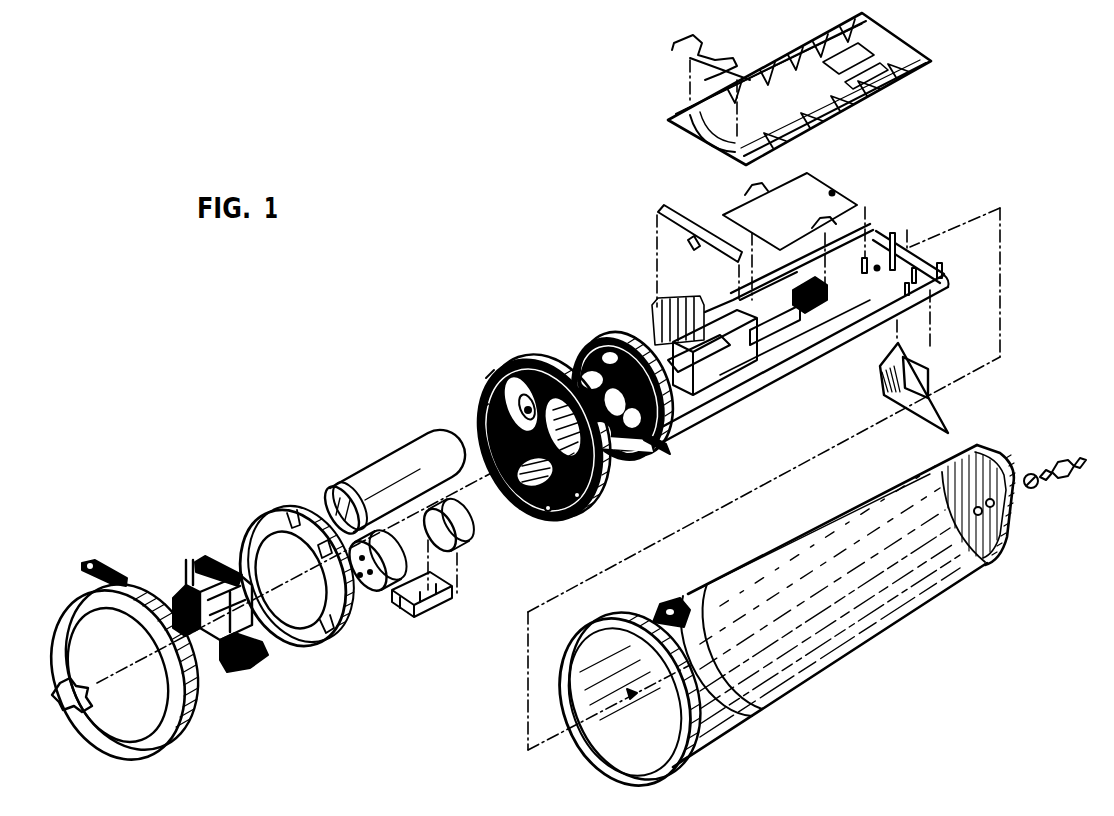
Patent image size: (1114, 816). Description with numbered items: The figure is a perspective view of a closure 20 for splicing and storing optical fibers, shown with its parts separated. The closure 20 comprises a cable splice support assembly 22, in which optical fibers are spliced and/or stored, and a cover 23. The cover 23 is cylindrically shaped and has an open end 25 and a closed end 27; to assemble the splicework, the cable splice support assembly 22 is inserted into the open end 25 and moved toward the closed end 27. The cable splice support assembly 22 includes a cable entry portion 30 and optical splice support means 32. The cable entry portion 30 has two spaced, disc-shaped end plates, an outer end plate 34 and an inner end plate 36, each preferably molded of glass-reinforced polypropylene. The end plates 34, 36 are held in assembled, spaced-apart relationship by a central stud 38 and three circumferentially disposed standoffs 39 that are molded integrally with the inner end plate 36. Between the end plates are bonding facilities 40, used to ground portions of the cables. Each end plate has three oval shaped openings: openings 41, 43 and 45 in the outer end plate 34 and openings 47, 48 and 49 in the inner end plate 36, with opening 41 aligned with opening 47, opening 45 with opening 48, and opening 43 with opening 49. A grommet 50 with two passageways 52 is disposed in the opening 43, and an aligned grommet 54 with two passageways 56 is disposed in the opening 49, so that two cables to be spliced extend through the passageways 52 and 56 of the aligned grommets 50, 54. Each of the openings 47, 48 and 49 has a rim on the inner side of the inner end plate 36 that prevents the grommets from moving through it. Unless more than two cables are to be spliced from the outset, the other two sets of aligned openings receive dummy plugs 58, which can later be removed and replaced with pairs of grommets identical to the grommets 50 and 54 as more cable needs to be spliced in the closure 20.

The closure 20 is at (529, 177).
The cable splice support assembly 22 is at (624, 225).
The cover 23 is at (862, 647).
The open end 25 is at (620, 730).
The closed end 27 is at (1010, 467).
The cable entry portion 30 is at (510, 337).
The optical splice support means 32 is at (780, 434).
The outer end plate 34 is at (490, 373).
The inner end plate 36 is at (600, 338).
The central stud 38 is at (563, 380).
The standoffs 39 is at (610, 457).
The bonding facilities 40 is at (663, 447).
The opening 41 is at (482, 407).
The opening 43 is at (547, 513).
The opening 45 is at (600, 503).
The opening 47 is at (573, 363).
The opening 48 is at (680, 377).
The opening 49 is at (613, 467).
The grommet 50 is at (410, 557).
The passageways 52 is at (372, 588).
The grommet 54 is at (468, 517).
The passageways 56 is at (453, 547).
The dummy plugs 58 is at (400, 478).